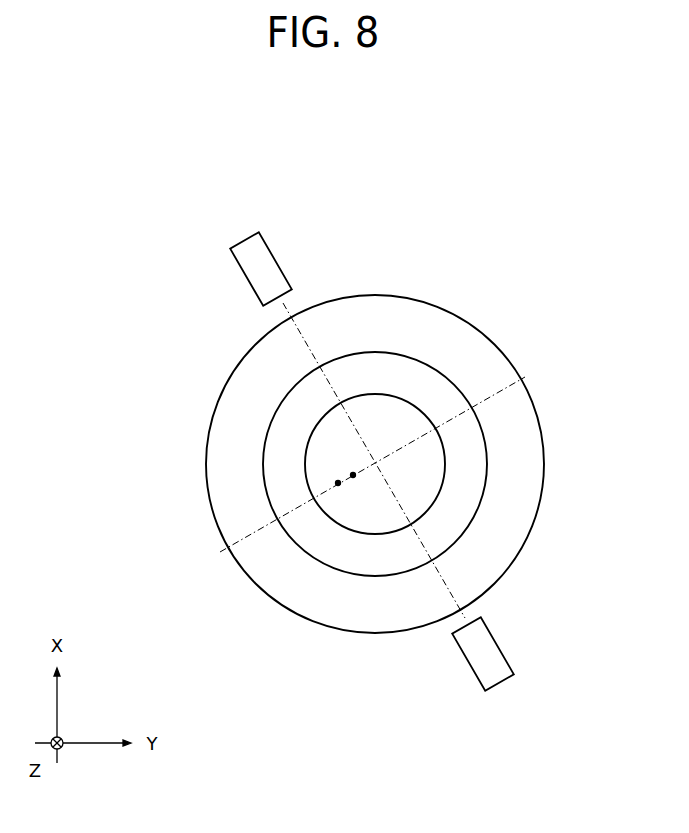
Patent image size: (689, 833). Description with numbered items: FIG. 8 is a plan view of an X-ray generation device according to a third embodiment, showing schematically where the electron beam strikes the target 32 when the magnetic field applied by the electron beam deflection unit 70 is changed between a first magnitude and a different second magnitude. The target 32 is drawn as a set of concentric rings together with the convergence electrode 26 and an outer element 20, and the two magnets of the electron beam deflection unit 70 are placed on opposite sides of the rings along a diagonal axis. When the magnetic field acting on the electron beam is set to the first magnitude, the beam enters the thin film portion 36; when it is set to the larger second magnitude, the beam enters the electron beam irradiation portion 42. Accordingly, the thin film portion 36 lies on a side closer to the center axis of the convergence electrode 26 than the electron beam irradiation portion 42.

The rotor 20 is at (403, 297).
The convergence electrode 26 is at (302, 378).
The target 32 is at (408, 395).
The thin film portion 36 is at (352, 483).
The electron beam irradiation portion 42 is at (337, 486).
The electron beam deflection unit 70 is at (245, 243).